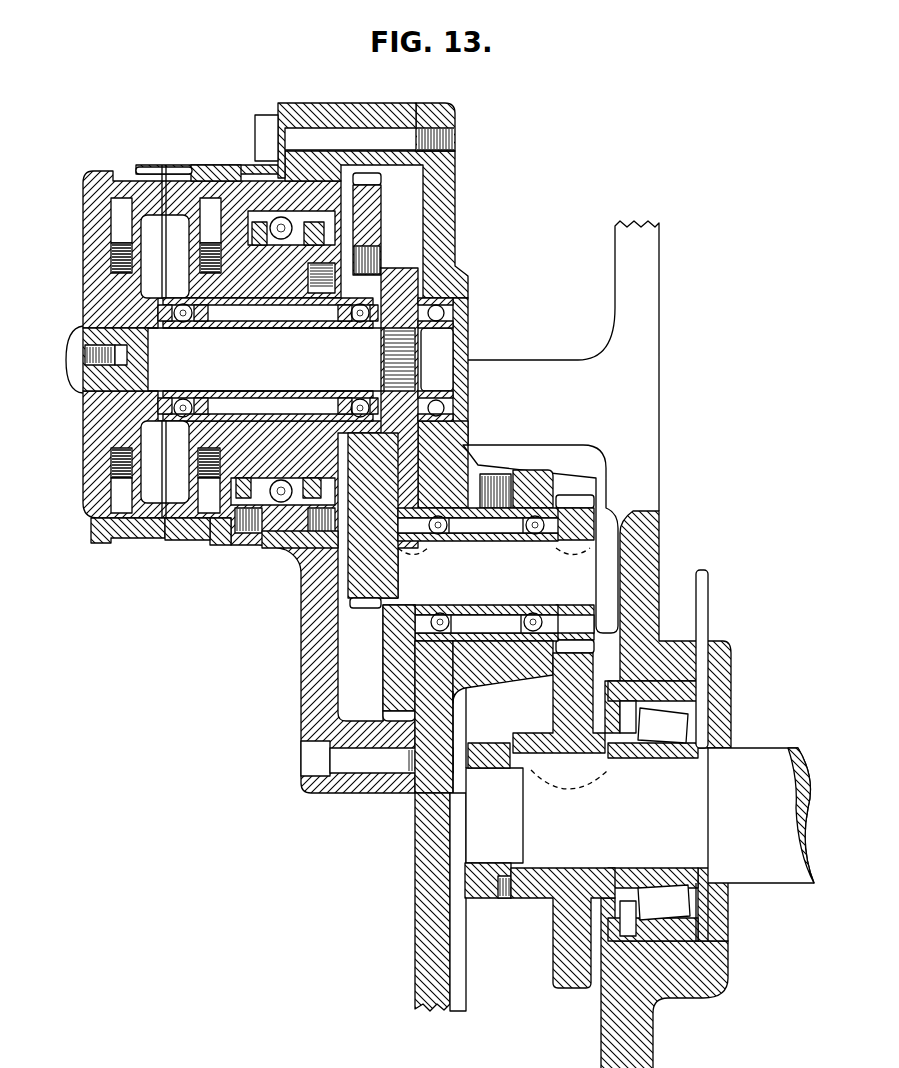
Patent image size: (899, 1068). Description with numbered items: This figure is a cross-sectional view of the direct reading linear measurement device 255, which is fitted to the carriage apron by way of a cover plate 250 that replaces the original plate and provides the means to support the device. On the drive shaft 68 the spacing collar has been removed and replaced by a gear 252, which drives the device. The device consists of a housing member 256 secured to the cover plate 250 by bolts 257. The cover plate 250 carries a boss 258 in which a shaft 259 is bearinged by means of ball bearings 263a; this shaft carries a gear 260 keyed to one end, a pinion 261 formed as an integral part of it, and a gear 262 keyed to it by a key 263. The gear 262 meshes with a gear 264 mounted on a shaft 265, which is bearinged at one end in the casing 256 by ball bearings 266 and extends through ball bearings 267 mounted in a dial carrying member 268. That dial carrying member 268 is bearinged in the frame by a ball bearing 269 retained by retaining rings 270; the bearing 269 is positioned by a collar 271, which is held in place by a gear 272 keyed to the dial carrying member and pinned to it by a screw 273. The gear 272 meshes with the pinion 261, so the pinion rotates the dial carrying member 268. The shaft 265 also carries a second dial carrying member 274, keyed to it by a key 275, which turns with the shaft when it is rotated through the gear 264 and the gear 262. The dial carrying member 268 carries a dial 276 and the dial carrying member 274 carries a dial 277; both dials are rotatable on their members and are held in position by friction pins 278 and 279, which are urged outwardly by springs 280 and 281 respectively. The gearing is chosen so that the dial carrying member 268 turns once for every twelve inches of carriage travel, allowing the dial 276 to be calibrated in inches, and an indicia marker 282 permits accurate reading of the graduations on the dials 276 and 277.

The shaft 68 is at (760, 742).
The cover plate 250 is at (411, 856).
The gear 252 is at (561, 978).
The direct reading linear measurement device 255 is at (335, 86).
The housing member 256 is at (380, 103).
The bolts 257 is at (258, 112).
The boss 258 is at (523, 477).
The shaft 259 is at (570, 562).
The gear 260 is at (574, 488).
The pinion 261 is at (361, 600).
The gear 262 is at (378, 656).
The key 263 is at (396, 536).
The ball bearings 263a is at (523, 604).
The gear 264 is at (402, 280).
The shaft 265 is at (318, 342).
The ball bearings 266 is at (450, 298).
The ball bearings 267 is at (181, 316).
The dial carrying member 268 is at (371, 278).
The ball bearing 269 is at (276, 500).
The retaining rings 270 is at (233, 187).
The collar 271 is at (366, 229).
The gear 272 is at (372, 170).
The screw 273 is at (368, 252).
The dial carrying member 274 is at (75, 273).
The key 275 is at (139, 322).
The dial 276 is at (170, 533).
The dial 277 is at (113, 528).
The friction pin 278 is at (203, 503).
The friction pin 279 is at (102, 494).
The spring 280 is at (101, 453).
The spring 281 is at (190, 455).
The indicia marker 282 is at (155, 160).